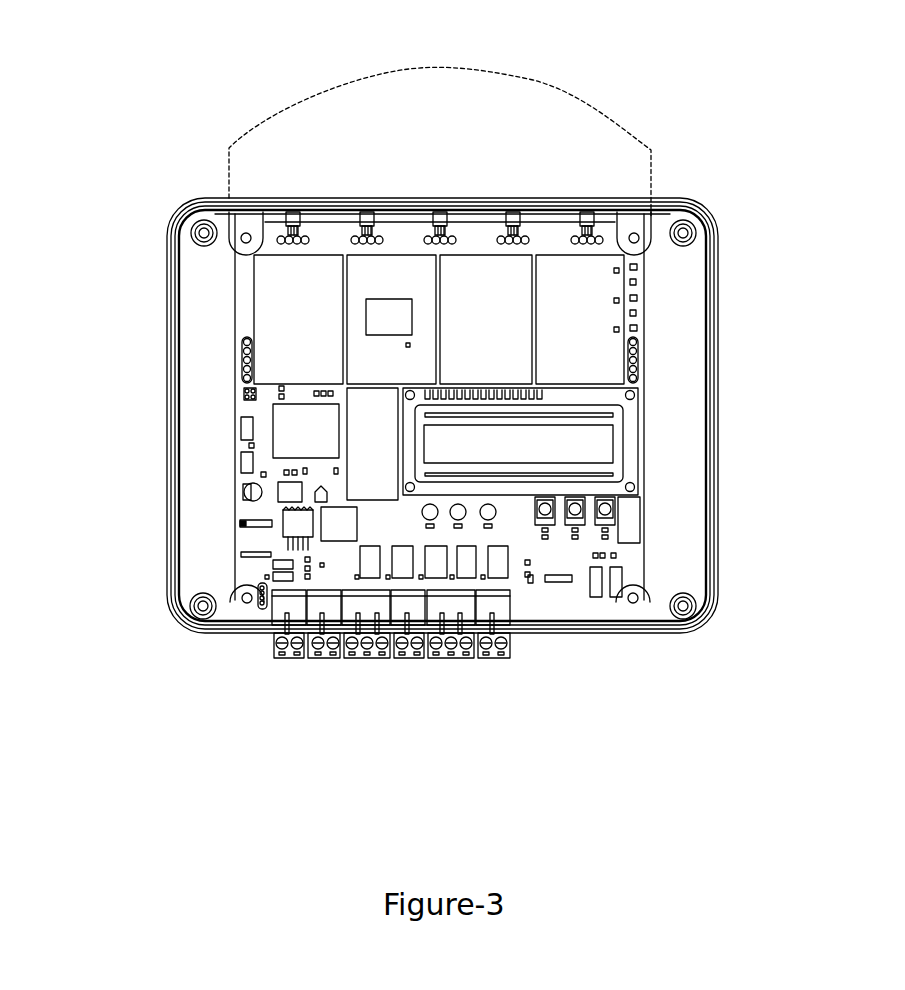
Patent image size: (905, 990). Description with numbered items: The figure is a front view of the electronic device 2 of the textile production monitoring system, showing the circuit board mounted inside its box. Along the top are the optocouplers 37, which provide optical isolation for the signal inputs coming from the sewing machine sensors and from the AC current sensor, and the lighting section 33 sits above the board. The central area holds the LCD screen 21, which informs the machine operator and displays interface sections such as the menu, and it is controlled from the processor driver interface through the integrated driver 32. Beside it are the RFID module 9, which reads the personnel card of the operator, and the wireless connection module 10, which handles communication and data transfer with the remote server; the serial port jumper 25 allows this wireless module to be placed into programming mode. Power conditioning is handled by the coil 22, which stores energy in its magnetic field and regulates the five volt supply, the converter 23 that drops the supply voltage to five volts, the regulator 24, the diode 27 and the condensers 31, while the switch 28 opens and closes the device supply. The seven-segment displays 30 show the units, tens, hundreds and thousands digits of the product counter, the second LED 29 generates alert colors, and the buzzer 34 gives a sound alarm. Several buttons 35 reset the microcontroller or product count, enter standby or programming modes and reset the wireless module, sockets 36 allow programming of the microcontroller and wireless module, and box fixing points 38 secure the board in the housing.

The electronic device 2 is at (708, 262).
The RFID module 9 is at (367, 410).
The wireless connection module 10 is at (303, 428).
The LCD screen 21 is at (610, 442).
The coil 22 is at (338, 527).
The converter 23 is at (298, 523).
The regulator 24 is at (278, 492).
The serial port jumper 25 is at (240, 400).
The diode 27 is at (277, 565).
The switch 28 is at (195, 632).
The second LED 29 is at (593, 556).
The 7-segment display 30 is at (570, 290).
The condenser 31 is at (240, 523).
The integrated driver 32 is at (377, 319).
The lighting section 33 is at (557, 138).
The buzzer 34 is at (557, 580).
The button 35 is at (253, 468).
The socket 36 is at (242, 350).
The optocoupler 37 is at (433, 558).
The box fixing point 38 is at (690, 602).